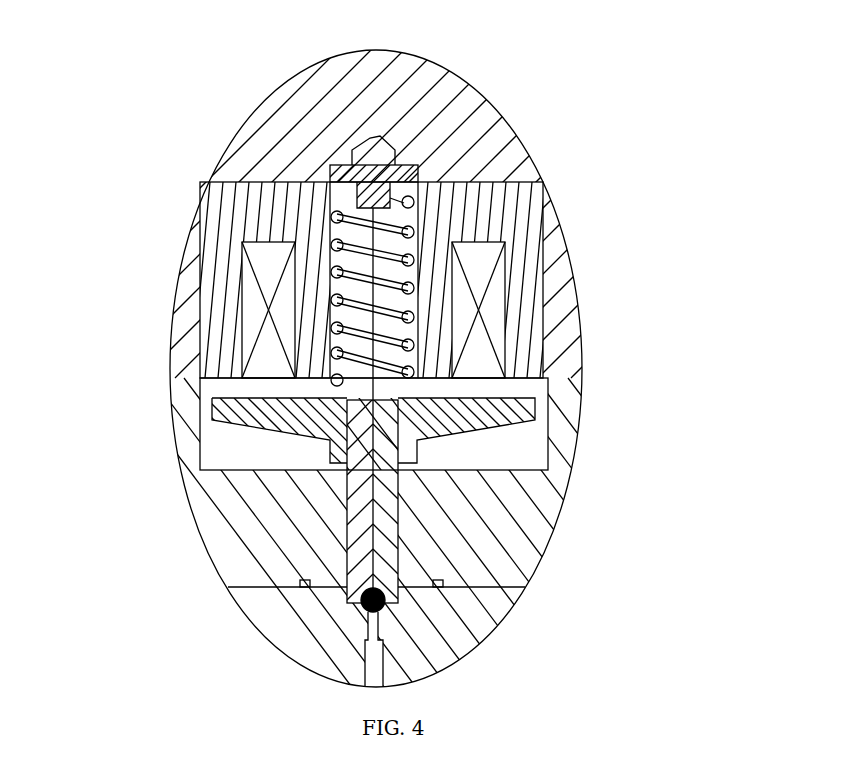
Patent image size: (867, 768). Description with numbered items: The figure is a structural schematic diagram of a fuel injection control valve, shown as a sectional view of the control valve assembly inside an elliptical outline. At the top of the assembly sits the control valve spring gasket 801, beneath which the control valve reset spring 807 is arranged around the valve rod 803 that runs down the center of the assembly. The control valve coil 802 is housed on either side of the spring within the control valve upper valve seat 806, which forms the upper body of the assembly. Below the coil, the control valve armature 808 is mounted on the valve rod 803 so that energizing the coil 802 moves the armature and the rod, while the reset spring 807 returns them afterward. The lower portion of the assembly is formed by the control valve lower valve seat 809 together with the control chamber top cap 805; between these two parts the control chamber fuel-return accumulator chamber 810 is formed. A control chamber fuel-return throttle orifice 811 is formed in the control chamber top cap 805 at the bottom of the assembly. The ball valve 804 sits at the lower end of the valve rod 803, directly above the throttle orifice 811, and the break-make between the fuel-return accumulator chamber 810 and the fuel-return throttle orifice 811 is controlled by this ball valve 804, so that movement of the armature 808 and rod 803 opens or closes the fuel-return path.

The control valve spring gasket 801 is at (400, 163).
The control valve coil 802 is at (473, 290).
The valve rod 803 is at (580, 380).
The ball valve 804 is at (387, 600).
The control chamber top cap 805 is at (447, 618).
The control valve upper valve seat 806 is at (325, 128).
The control valve reset spring 807 is at (340, 240).
The control valve armature 808 is at (272, 403).
The control valve lower valve seat 809 is at (230, 472).
The control chamber fuel-return accumulator chamber 810 is at (287, 570).
The control chamber fuel-return throttle orifice 811 is at (373, 673).